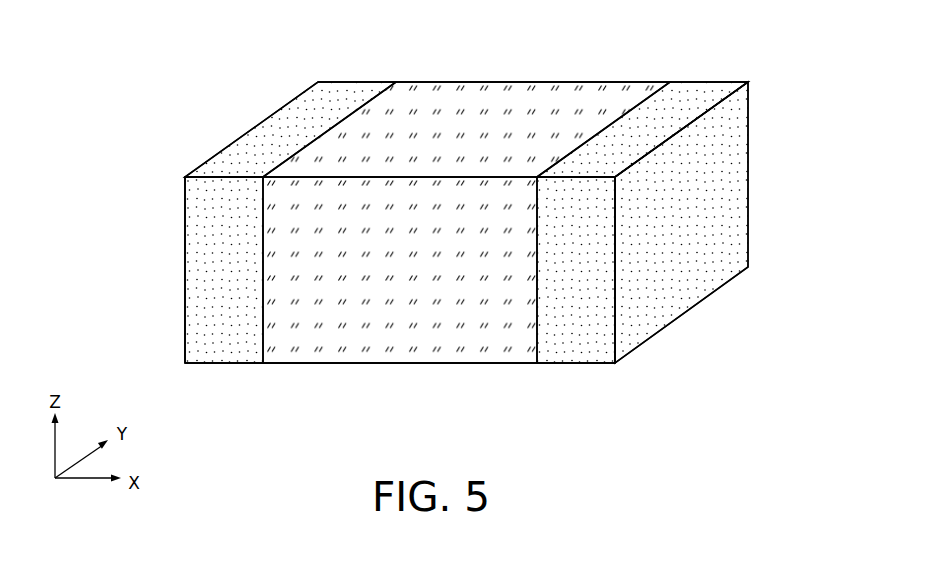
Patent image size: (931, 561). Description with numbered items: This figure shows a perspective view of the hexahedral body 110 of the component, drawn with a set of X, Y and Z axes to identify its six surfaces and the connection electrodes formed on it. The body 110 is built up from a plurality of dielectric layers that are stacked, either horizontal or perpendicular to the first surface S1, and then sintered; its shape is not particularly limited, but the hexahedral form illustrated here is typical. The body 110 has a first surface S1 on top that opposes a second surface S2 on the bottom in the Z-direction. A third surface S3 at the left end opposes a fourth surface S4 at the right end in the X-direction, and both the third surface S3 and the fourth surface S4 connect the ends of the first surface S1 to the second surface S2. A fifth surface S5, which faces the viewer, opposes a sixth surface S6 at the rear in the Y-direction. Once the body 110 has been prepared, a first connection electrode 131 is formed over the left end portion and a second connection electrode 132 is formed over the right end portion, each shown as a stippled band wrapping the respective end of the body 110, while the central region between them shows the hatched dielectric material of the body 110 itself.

The first connection electrode 131 is at (335, 103).
The body 110 is at (420, 105).
The second connection electrode 132 is at (685, 103).
The first surface S1 is at (503, 100).
The second surface S2 is at (440, 348).
The third surface S3 is at (200, 274).
The fourth surface S4 is at (735, 185).
The fifth surface S5 is at (392, 330).
The sixth surface S6 is at (555, 98).